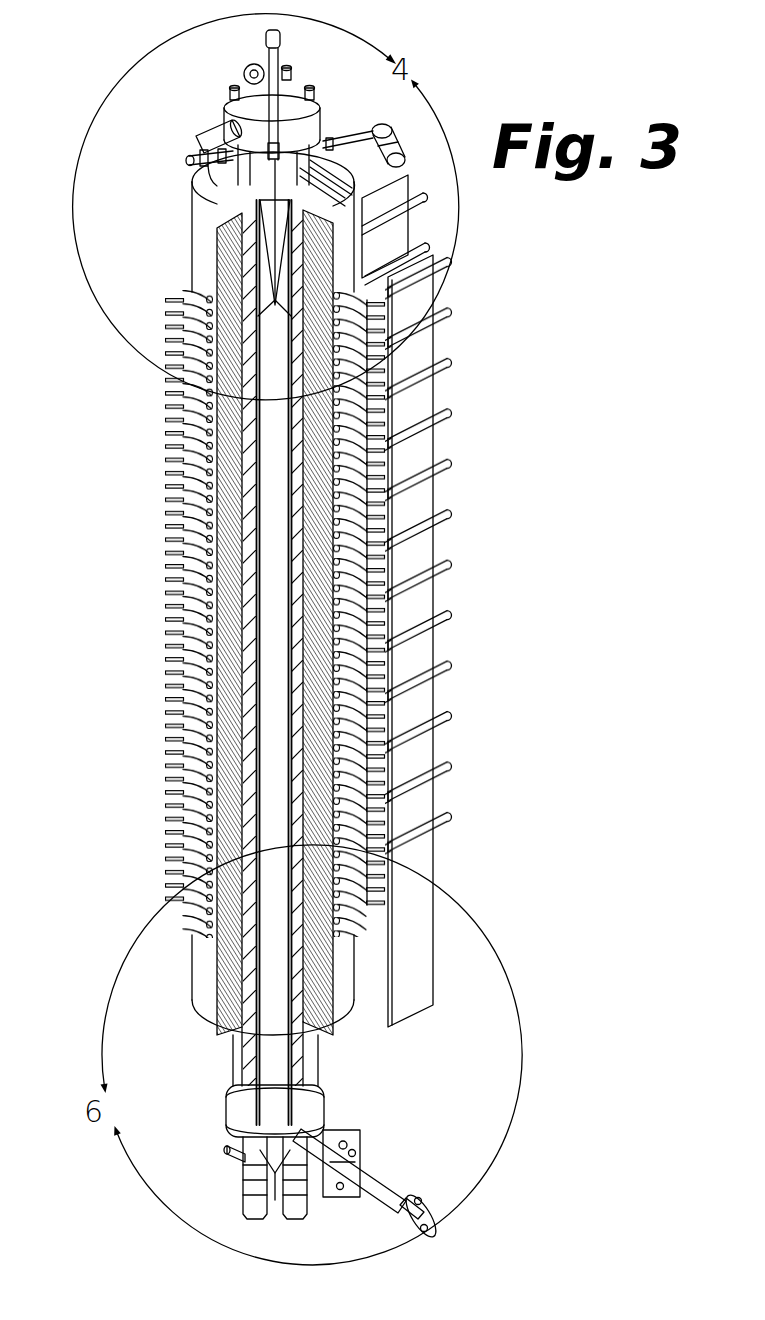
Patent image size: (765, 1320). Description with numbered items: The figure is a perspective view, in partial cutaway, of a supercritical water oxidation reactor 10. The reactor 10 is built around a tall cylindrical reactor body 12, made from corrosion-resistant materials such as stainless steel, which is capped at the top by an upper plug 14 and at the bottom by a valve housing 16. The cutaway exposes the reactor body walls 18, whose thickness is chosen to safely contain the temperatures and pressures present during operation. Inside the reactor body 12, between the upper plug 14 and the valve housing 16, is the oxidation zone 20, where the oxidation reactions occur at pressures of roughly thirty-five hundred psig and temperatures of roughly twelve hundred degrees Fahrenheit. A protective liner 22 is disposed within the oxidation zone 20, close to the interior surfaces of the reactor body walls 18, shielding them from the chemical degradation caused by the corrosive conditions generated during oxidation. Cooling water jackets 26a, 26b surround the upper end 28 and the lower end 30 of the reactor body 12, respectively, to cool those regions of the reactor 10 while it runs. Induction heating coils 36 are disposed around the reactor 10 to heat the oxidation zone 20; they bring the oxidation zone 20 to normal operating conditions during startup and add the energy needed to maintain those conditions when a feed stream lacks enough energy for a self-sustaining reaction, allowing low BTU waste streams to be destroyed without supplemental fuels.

The reactor 10 is at (481, 402).
The reactor body 12 is at (233, 1046).
The upper plug 14 is at (243, 110).
The valve housing 16 is at (240, 1203).
The reactor body walls 18 is at (257, 545).
The oxidation zone 20 is at (272, 270).
The protective liner 22 is at (260, 647).
The cooling water jacket 26a is at (327, 108).
The cooling water jacket 26b is at (323, 1107).
The upper end 28 is at (303, 82).
The lower end 30 is at (318, 1060).
The induction heating coils 36 is at (182, 685).